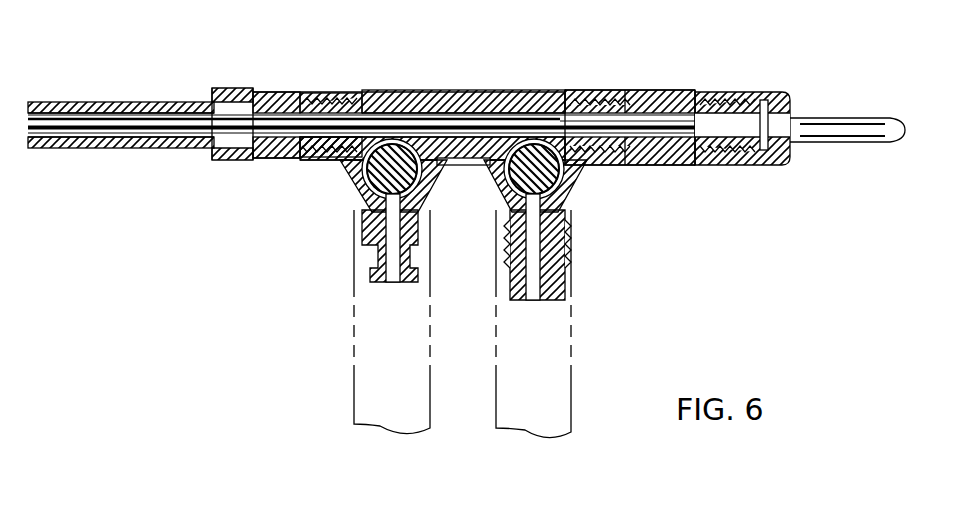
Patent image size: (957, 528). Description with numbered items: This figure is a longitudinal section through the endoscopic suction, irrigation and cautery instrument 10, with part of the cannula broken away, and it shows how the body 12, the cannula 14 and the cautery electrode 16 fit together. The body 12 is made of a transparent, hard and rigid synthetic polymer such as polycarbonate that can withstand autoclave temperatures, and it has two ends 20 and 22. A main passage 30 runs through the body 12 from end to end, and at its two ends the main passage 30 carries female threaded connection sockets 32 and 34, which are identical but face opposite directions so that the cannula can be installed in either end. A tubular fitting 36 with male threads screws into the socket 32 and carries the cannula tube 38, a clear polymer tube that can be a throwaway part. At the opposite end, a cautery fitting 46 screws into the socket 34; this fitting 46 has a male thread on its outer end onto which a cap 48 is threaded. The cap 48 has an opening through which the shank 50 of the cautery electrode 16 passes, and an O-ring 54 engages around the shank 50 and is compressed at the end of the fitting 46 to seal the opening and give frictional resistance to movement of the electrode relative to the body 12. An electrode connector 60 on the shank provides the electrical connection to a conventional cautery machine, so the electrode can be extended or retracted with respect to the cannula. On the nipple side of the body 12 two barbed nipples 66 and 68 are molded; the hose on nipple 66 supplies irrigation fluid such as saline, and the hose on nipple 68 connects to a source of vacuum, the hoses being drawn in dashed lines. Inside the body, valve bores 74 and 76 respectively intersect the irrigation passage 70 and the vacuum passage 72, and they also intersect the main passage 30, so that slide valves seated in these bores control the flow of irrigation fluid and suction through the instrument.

The endoscopic suction, irrigation and cautery instrument 10 is at (548, 78).
The body 12 is at (470, 82).
The cannula 14 is at (97, 95).
The cautery electrode 16 is at (118, 128).
The body end 20 is at (312, 90).
The body end 22 is at (620, 95).
The main passage 30 is at (412, 118).
The female threaded connection socket 32 is at (328, 104).
The female threaded connection socket 34 is at (595, 104).
The tubular fitting 36 is at (265, 160).
The cannula tube 38 is at (180, 100).
The cautery fitting 46 is at (652, 166).
The cap 48 is at (725, 166).
The shank 50 is at (800, 118).
The O-ring 54 is at (766, 98).
The electrode connector 60 is at (888, 142).
The nipple 66 is at (374, 278).
The nipple 68 is at (570, 290).
The irrigation passage 70 is at (393, 255).
The vacuum passage 72 is at (540, 228).
The valve bore 74 is at (370, 168).
The valve bore 76 is at (556, 168).